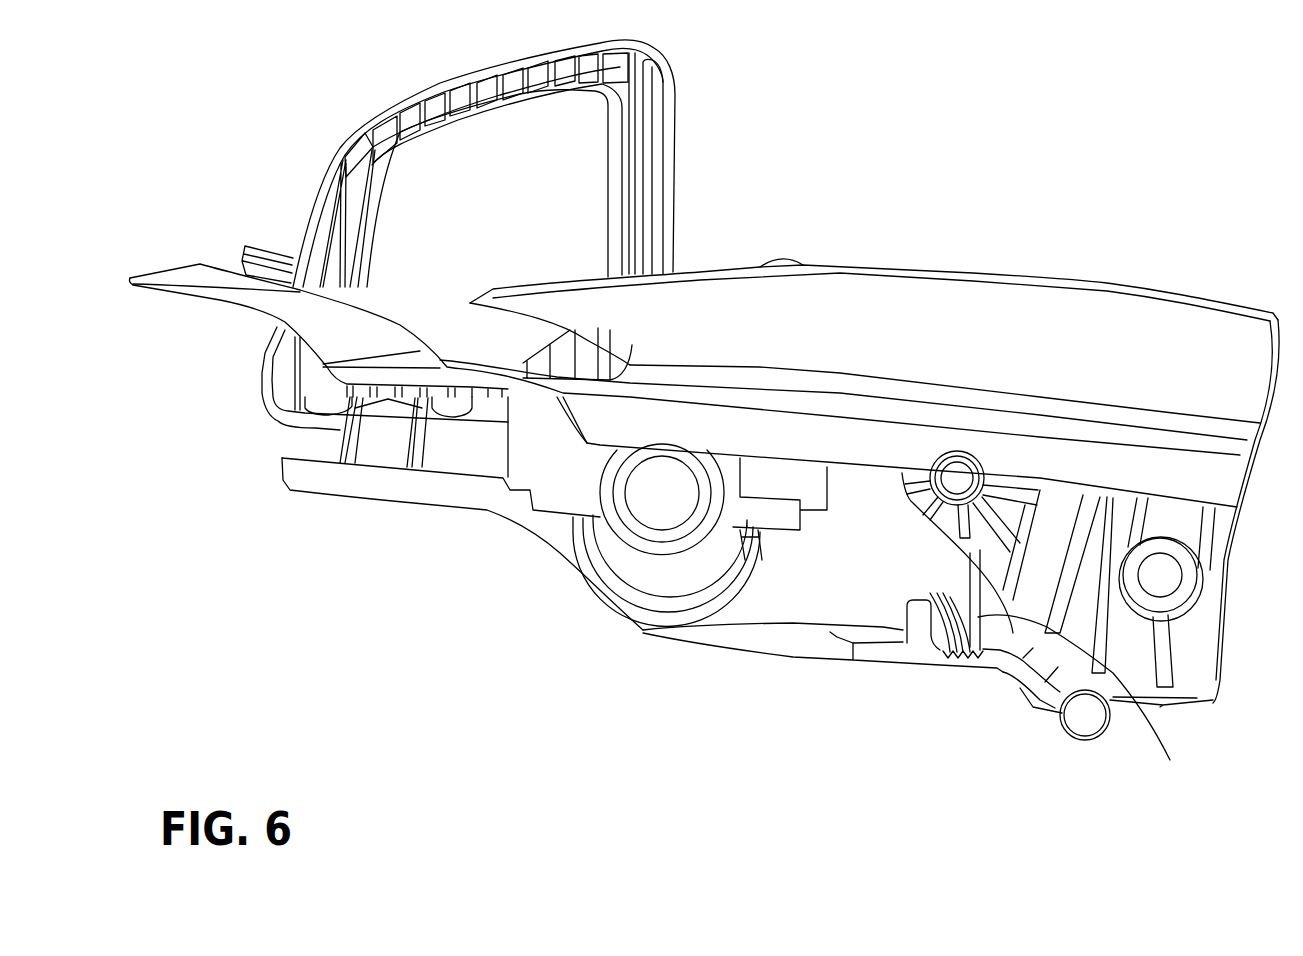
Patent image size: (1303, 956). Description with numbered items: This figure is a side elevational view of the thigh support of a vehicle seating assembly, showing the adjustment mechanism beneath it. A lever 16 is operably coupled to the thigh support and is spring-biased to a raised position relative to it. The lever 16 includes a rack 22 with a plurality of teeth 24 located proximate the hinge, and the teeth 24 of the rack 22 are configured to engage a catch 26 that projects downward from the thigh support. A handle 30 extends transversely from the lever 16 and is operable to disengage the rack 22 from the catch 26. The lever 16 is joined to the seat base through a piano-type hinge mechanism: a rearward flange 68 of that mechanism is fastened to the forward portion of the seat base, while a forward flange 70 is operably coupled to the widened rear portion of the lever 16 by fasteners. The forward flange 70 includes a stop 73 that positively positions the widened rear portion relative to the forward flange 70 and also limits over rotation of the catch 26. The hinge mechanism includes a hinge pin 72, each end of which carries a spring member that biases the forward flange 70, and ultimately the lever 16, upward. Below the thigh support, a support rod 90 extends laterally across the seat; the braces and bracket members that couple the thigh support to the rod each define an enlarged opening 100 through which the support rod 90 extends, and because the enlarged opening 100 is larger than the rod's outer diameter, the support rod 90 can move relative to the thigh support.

The handle 30 is at (333, 148).
The lever 16 is at (800, 650).
The support rod 90 is at (648, 513).
The enlarged opening 100 is at (678, 575).
The teeth 24 is at (946, 630).
The stop 73 is at (917, 612).
The rack 22 is at (947, 667).
The forward flange 70 is at (1003, 670).
The rearward flange 68 is at (1058, 690).
The hinge pin 72 is at (1090, 722).
The catch 26 is at (1080, 706).